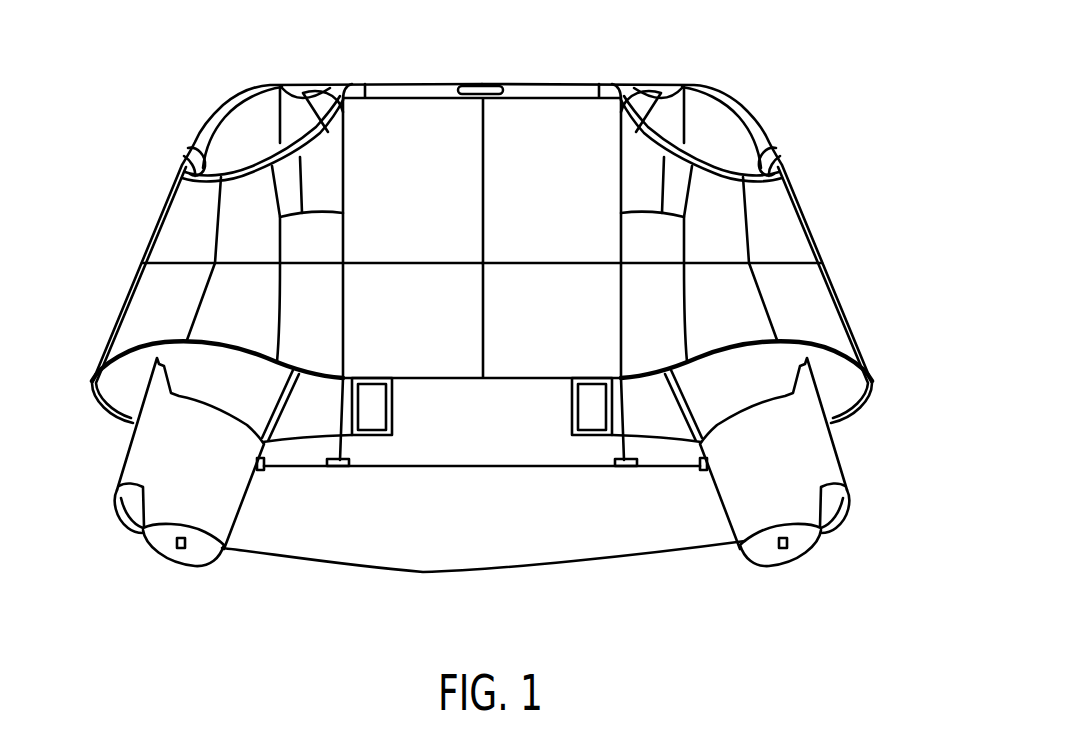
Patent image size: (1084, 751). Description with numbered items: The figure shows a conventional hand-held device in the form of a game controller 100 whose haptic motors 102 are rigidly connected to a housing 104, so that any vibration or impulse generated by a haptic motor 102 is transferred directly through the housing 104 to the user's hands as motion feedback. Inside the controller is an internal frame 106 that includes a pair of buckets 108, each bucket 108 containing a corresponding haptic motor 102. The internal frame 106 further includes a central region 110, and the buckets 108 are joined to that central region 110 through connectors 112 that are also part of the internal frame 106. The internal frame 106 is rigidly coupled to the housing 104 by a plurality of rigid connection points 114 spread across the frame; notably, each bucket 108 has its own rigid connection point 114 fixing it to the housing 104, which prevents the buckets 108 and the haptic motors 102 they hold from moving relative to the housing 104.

The game controller 100 is at (781, 60).
The haptic motor 102 is at (130, 513).
The housing 104 is at (157, 217).
The internal frame 106 is at (413, 442).
The bucket 108 is at (147, 474).
The central region 110 is at (498, 408).
The connector 112 is at (323, 430).
The rigid connection point 114 is at (776, 545).